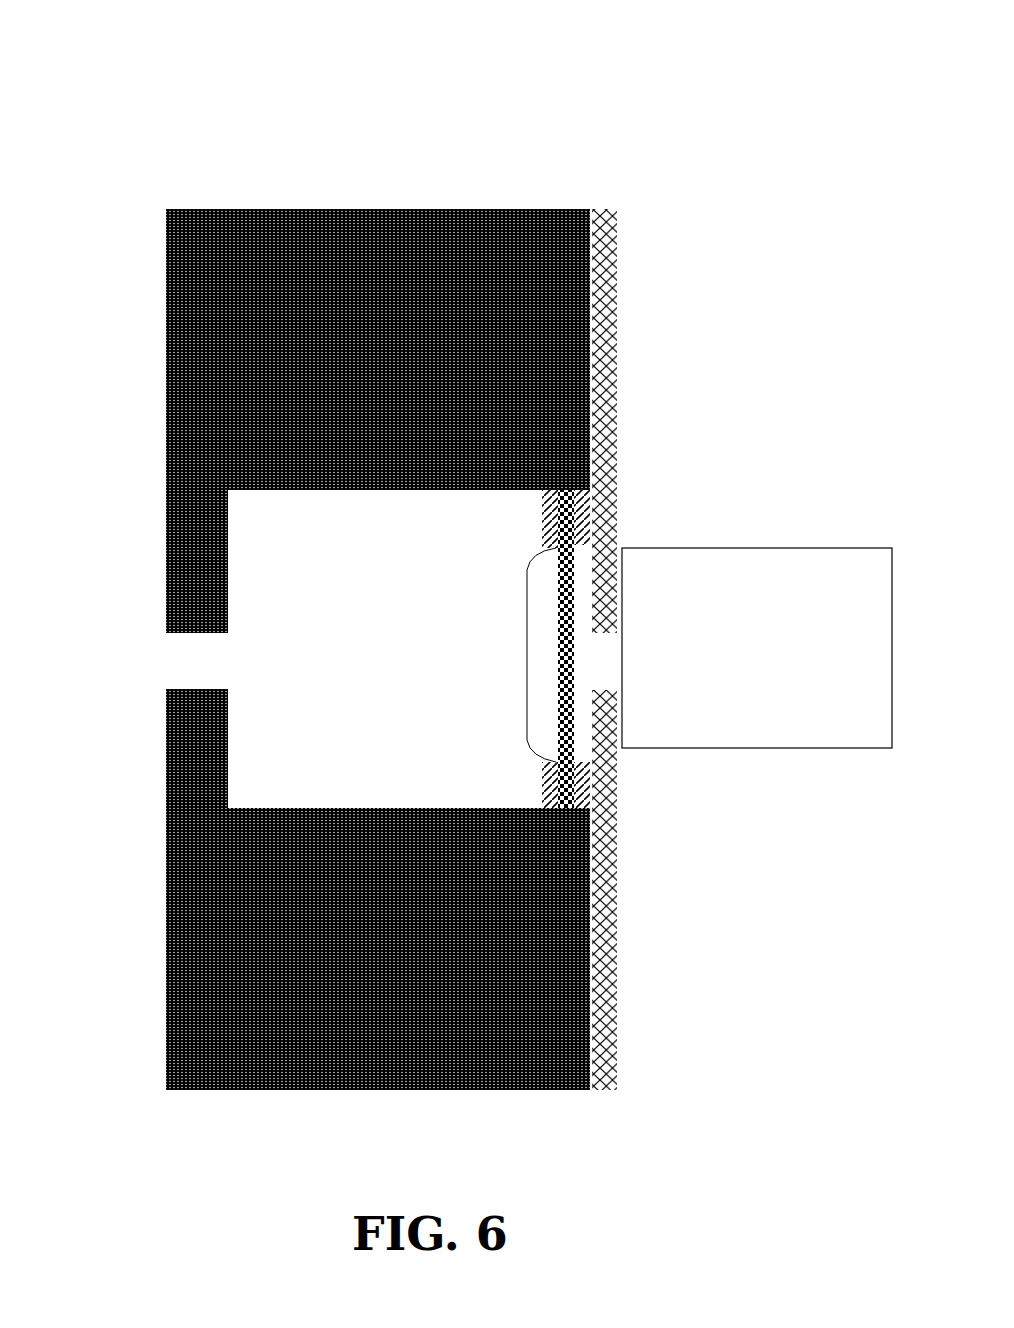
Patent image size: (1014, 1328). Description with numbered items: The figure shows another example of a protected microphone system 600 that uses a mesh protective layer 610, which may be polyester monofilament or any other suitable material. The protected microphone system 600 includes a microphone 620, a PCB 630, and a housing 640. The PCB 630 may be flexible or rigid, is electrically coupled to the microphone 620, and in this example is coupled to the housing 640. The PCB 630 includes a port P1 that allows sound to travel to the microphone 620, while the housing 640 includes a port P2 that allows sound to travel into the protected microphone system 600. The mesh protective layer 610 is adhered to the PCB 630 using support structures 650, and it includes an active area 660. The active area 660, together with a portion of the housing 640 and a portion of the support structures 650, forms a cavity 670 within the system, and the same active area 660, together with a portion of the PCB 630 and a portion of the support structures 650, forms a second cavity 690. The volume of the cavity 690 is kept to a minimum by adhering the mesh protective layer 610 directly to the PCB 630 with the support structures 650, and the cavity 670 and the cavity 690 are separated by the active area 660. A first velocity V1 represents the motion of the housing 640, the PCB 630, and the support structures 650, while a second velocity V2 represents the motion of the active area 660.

The protected microphone system 600 is at (468, 546).
The mesh protective layer 610 is at (558, 612).
The microphone 620 is at (757, 548).
The PCB 630 is at (602, 210).
The housing 640 is at (376, 210).
The support structures 650 is at (546, 514).
The active area 660 is at (527, 655).
The cavity 670 is at (236, 720).
The cavity 690 is at (588, 729).
The first velocity V1 is at (146, 382).
The second velocity V2 is at (539, 705).
The port P1 is at (613, 653).
The port P2 is at (157, 656).